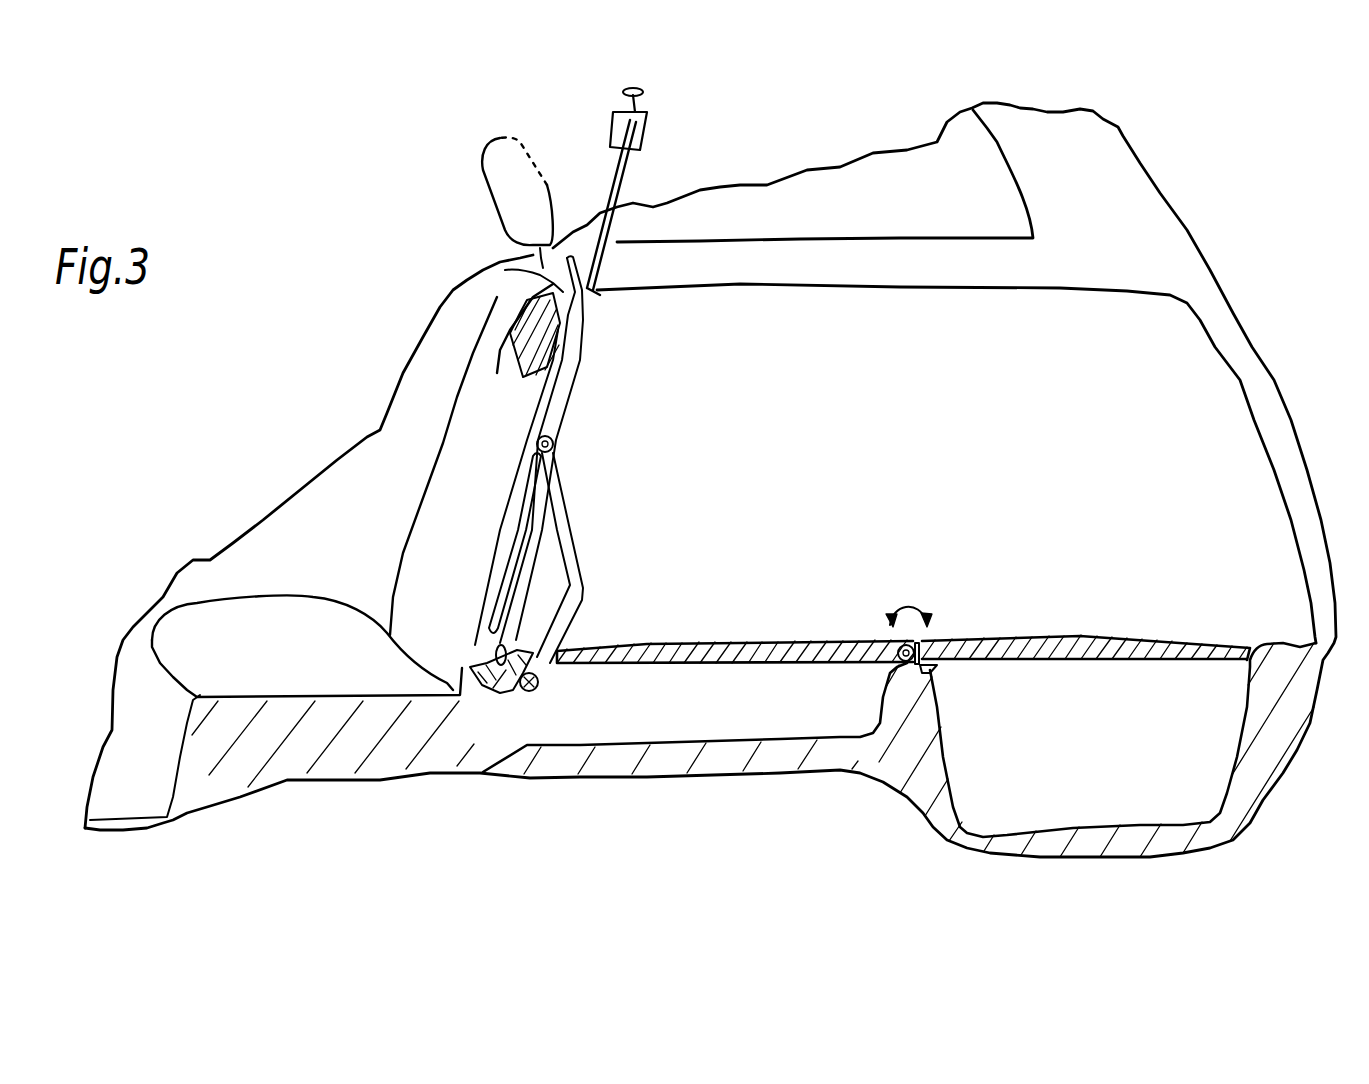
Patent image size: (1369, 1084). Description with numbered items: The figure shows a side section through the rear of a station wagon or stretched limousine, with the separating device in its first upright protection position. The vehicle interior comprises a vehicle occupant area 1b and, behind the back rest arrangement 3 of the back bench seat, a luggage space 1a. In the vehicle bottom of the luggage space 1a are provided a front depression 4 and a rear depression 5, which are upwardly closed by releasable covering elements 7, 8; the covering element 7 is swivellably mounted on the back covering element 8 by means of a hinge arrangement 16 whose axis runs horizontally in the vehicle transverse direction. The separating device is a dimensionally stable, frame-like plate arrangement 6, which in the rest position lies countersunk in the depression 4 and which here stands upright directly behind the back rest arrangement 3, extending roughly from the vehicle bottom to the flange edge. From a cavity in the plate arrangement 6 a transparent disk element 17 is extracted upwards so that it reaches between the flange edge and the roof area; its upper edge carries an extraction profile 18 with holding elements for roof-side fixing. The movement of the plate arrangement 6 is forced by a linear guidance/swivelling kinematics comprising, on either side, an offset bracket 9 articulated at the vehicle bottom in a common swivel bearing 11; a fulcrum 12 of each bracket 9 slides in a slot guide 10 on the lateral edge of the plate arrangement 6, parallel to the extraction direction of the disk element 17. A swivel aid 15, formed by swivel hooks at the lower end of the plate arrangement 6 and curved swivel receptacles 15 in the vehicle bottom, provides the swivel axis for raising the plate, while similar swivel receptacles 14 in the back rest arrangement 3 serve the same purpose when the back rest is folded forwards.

The luggage space 1a is at (945, 456).
The vehicle occupant area 1b is at (295, 430).
The back rest arrangement 3 is at (440, 510).
The front depression 4 is at (692, 740).
The depression 5 is at (960, 793).
The plate arrangement 6 is at (583, 380).
The covering element 7 is at (743, 643).
The back covering element 8 is at (1021, 638).
The offset bracket 9 is at (583, 580).
The linear guide 10 is at (500, 593).
The swivel bearing 11 is at (537, 688).
The fulcrum 12 is at (555, 442).
The swivel receptacles 14 is at (520, 357).
The swivel aid 15 is at (481, 697).
The hinge arrangement 16 is at (923, 643).
The transparent disk element 17 is at (617, 177).
The extraction profile 18 is at (647, 113).